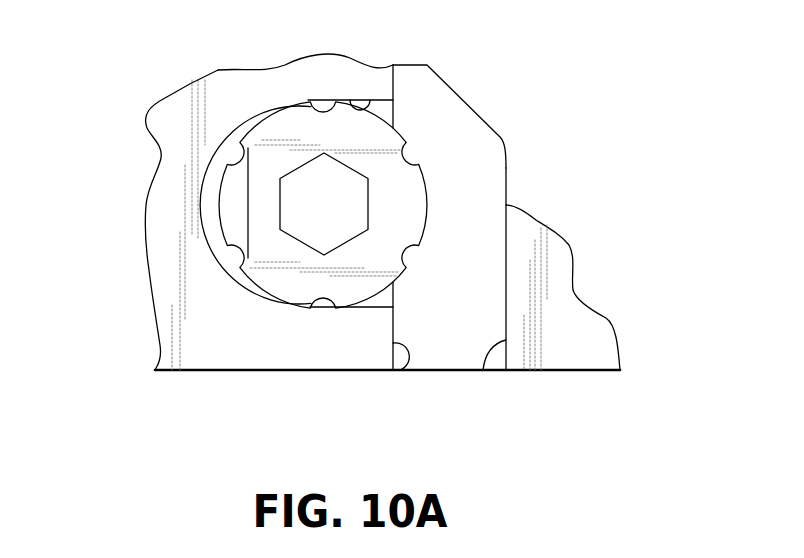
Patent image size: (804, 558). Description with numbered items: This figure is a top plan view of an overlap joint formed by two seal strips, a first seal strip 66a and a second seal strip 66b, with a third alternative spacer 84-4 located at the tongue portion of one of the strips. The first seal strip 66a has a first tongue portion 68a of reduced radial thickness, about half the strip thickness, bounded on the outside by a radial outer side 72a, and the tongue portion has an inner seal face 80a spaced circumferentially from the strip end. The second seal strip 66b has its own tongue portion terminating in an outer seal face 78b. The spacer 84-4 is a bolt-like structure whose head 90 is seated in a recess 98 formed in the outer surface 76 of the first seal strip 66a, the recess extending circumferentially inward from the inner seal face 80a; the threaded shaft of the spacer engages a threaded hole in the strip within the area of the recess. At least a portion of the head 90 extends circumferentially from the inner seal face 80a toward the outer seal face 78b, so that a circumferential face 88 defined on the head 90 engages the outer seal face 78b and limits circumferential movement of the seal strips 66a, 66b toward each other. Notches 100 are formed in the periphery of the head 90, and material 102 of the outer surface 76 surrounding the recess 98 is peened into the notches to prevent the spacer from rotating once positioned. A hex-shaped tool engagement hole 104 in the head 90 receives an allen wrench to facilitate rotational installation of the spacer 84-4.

The first seal strip 66a is at (239, 333).
The second seal strip 66b is at (563, 342).
The first tongue portion 68a is at (457, 90).
The radial outer side of the tongue portion 72a is at (449, 335).
The radial outer surface of the seal strip 76 is at (163, 233).
The outer seal face 78b is at (483, 370).
The inner seal face 80a is at (405, 372).
The spacer 84-4 is at (423, 192).
The circumferential face 88 is at (425, 212).
The head 90 is at (240, 189).
The recess 98 is at (372, 107).
The notches 100 is at (244, 159).
The material 102 is at (244, 160).
The tool engagement hole 104 is at (292, 240).